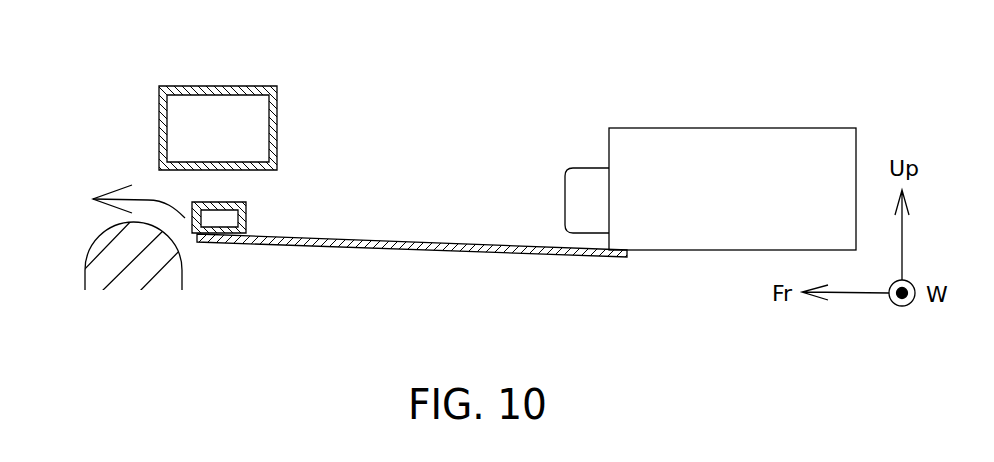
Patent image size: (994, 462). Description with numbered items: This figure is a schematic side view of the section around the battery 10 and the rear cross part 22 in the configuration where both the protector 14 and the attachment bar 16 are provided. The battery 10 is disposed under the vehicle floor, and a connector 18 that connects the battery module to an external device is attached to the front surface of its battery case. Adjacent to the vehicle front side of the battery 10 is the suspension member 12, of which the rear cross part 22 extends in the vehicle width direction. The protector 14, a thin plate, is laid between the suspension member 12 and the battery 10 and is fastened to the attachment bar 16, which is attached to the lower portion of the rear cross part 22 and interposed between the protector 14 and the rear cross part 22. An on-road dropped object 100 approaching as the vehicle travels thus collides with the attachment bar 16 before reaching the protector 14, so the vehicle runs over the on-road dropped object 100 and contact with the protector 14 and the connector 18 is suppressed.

The battery 10 is at (733, 127).
The suspension member 12 is at (224, 94).
The protector 14 is at (402, 239).
The attachment bar 16 is at (246, 212).
The connector 18 is at (585, 168).
The rear cross part 22 is at (217, 85).
The on-road dropped object 100 is at (93, 243).